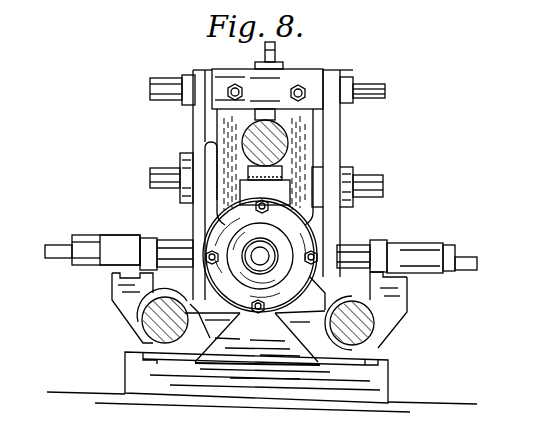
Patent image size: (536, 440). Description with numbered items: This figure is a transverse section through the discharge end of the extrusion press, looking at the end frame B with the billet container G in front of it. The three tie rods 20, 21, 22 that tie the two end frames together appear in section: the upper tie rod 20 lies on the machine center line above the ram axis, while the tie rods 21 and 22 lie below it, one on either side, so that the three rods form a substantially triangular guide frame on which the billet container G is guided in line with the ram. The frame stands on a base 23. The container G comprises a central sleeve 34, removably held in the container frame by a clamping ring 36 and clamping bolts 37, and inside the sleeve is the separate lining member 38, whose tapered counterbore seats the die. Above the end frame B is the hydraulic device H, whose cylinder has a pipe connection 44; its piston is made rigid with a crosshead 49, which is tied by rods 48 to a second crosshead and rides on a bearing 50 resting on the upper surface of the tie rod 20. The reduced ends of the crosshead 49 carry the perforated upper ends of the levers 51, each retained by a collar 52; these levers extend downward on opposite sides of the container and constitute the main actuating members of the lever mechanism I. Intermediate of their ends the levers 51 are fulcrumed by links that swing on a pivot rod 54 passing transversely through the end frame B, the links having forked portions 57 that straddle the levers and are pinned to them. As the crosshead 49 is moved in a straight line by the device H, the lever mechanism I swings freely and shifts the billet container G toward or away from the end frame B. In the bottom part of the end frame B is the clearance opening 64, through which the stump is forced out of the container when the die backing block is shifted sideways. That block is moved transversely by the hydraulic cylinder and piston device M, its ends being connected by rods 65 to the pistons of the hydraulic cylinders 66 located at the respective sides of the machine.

The tie rod 20 is at (282, 147).
The tie rod 21 is at (365, 333).
The tie rod 22 is at (145, 328).
The base 23 is at (171, 11).
The sleeve 34 is at (260, 255).
The clamping ring 36 is at (303, 233).
The clamping bolts 37 is at (283, 315).
The lining member 38 is at (252, 268).
The pipe connection 44 is at (277, 45).
The rods 48 is at (234, 86).
The crosshead 49 is at (324, 77).
The bearing 50 is at (290, 128).
The levers 51 is at (197, 132).
The collar 52 is at (187, 75).
The pivot rod 54 is at (152, 182).
The forked portions 57 is at (185, 163).
The clearance opening 64 is at (260, 313).
The rods 65 is at (178, 252).
The hydraulic cylinders 66 is at (101, 238).
The end frame B is at (265, 167).
The billet container G is at (233, 240).
The hydraulic device H is at (267, 78).
The lever arrangement I is at (365, 159).
The hydraulic cylinder and piston device M is at (262, 308).